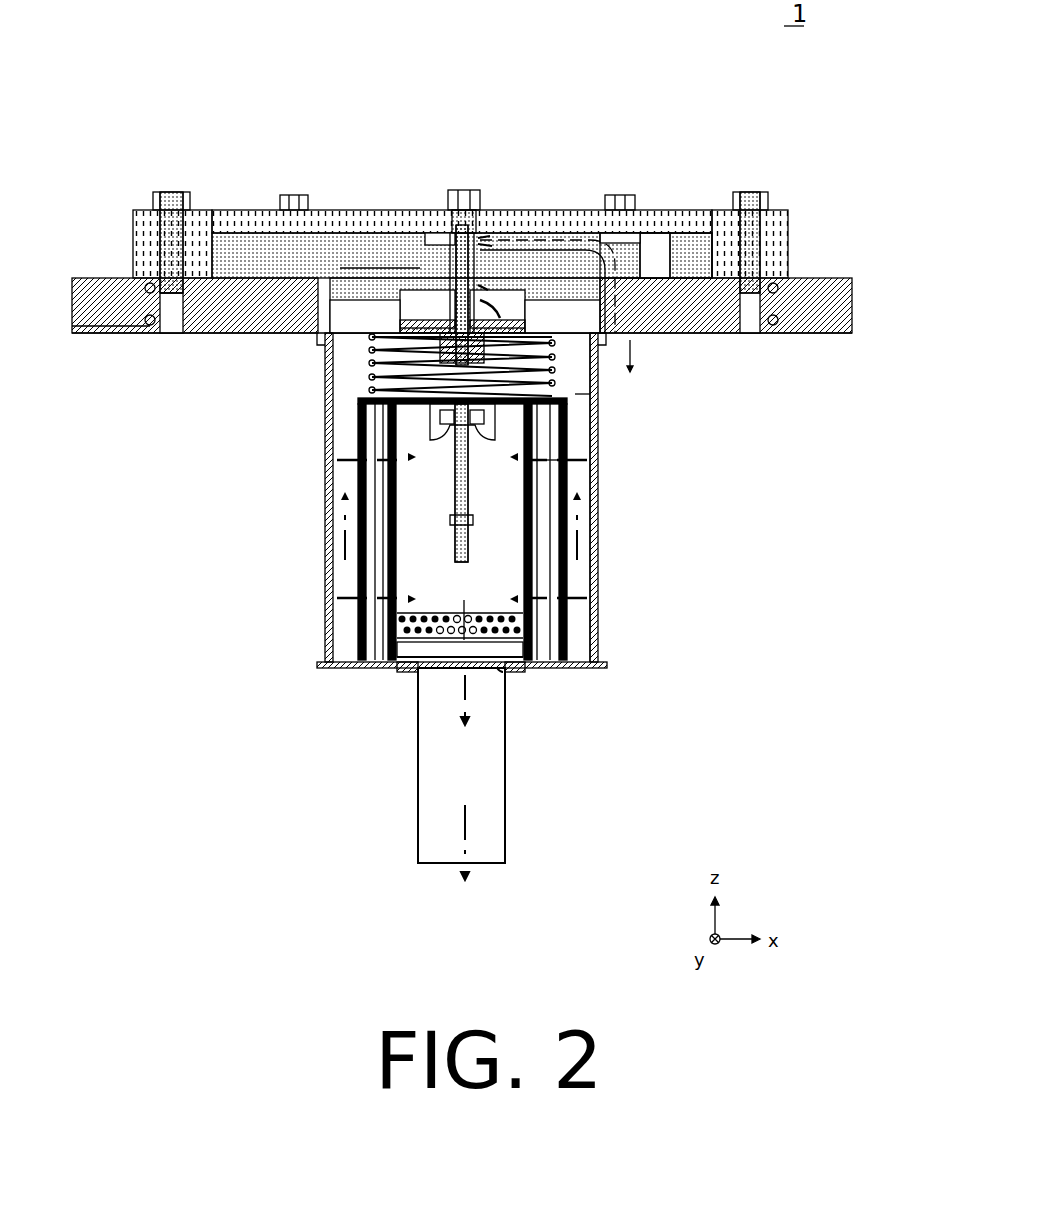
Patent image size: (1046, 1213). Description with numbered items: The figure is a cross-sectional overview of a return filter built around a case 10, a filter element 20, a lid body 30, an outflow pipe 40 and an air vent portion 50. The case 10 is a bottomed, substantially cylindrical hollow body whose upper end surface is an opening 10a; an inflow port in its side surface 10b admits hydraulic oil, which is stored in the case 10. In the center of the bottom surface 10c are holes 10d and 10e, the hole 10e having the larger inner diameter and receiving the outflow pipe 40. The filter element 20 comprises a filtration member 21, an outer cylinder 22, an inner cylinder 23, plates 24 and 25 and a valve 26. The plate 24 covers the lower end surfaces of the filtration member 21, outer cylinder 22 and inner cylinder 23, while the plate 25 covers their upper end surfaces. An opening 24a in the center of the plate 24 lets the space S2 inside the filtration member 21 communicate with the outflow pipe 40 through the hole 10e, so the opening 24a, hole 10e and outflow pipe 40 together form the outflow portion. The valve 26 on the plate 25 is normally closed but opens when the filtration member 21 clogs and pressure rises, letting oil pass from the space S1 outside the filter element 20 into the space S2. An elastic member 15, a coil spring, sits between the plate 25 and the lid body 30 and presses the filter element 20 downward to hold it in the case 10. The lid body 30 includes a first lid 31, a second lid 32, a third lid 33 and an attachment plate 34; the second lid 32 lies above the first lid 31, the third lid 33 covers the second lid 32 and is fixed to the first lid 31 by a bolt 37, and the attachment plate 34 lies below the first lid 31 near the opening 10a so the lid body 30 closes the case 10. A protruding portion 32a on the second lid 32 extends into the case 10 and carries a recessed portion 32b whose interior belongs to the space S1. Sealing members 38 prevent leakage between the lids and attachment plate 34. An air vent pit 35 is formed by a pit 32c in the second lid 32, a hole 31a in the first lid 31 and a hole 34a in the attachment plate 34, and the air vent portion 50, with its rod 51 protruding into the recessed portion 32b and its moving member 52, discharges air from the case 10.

The case 10 is at (620, 583).
The opening 10a is at (318, 338).
The side surface 10b is at (598, 602).
The bottom surface 10c is at (550, 672).
The hole 10d is at (505, 680).
The hole 10e is at (498, 676).
The elastic member 15 is at (372, 372).
The filter element 20 is at (218, 463).
The filtration member 21 is at (373, 563).
The outer cylinder 22 is at (362, 597).
The inner cylinder 23 is at (410, 523).
The plate 24 is at (353, 650).
The opening 24a is at (385, 668).
The plate 25 is at (360, 405).
The valve 26 is at (453, 490).
The lid body 30 is at (335, 128).
The first lid 31 is at (275, 275).
The hole 31a is at (650, 240).
The second lid 32 is at (305, 240).
The protruding portion 32a is at (355, 300).
The recessed portion 32b is at (420, 240).
The pit 32c is at (612, 240).
The third lid 33 is at (338, 205).
The attachment plate 34 is at (228, 270).
The hole 34a is at (705, 240).
The air vent pit 35 is at (780, 115).
The bolt 37 is at (168, 300).
The sealing members 38 is at (150, 325).
The outflow pipe 40 is at (505, 818).
The air vent portion 50 is at (562, 116).
The rod 51 is at (475, 240).
The moving member 52 is at (495, 290).
The space S1 is at (575, 394).
The space S2 is at (520, 460).